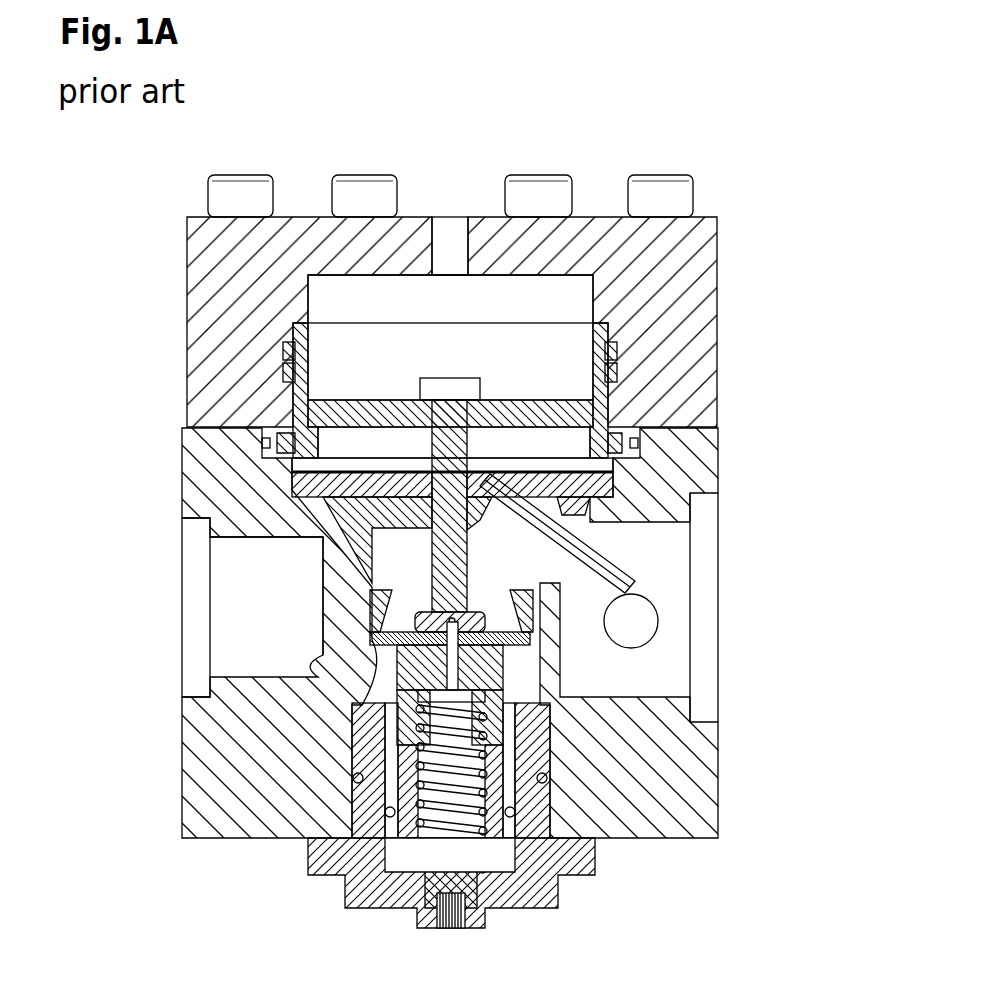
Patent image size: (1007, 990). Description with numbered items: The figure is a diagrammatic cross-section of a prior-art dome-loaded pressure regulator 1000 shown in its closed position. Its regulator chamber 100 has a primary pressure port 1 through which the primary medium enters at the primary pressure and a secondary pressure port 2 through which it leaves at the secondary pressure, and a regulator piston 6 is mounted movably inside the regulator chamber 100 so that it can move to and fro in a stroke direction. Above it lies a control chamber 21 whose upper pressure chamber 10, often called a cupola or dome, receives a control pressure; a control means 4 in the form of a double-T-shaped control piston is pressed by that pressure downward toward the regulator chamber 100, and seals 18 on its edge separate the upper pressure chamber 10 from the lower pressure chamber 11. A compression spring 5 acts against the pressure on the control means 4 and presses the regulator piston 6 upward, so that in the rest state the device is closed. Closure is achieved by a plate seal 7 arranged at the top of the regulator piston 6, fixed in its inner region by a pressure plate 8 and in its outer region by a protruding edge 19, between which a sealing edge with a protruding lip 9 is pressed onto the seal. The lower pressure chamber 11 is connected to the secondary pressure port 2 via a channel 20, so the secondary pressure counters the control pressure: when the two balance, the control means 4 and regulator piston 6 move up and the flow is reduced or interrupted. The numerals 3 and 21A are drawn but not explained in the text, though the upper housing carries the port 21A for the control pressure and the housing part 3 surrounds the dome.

The dome-loaded pressure regulator 1000 is at (727, 178).
The upper housing part 3 is at (213, 283).
The control port 21A is at (445, 237).
The channel 20 is at (567, 298).
The seals 18 is at (615, 348).
The control means 4 is at (330, 412).
The upper pressure chamber 10 is at (563, 372).
The control chamber 21 is at (555, 410).
The lower pressure chamber 11 is at (547, 440).
The secondary pressure port 2 is at (637, 565).
The primary pressure port 1 is at (245, 553).
The protruding edge 19 is at (567, 660).
The pressure plate 8 is at (605, 622).
The protruding lip 9 is at (367, 595).
The plate seal 7 is at (415, 638).
The regulator piston 6 is at (362, 700).
The compression spring 5 is at (353, 745).
The regulator chamber 100 is at (517, 687).